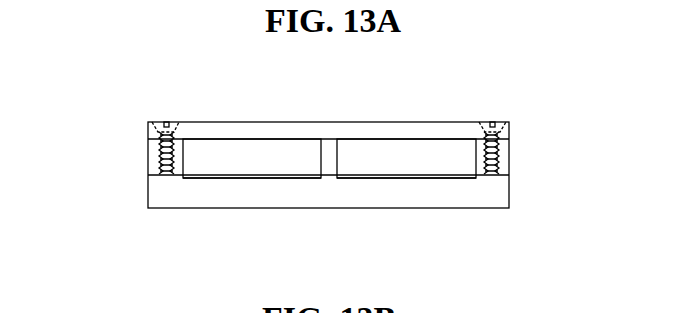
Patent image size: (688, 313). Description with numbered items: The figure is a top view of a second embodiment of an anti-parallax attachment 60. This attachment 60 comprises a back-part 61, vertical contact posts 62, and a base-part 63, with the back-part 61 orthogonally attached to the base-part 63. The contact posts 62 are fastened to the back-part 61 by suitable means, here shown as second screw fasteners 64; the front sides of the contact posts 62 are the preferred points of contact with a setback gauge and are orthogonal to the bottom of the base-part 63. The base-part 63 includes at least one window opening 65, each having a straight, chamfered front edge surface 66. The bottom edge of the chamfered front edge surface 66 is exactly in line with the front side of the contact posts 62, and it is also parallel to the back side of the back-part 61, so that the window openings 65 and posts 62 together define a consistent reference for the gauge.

The anti-parallax attachment 60 is at (102, 242).
The back-part 61 is at (400, 132).
The vertical contact posts 62 is at (153, 153).
The base-part 63 is at (473, 195).
The second screw fasteners 64 is at (164, 120).
The window opening 65 is at (280, 158).
The chamfered front edge surface 66 is at (222, 175).